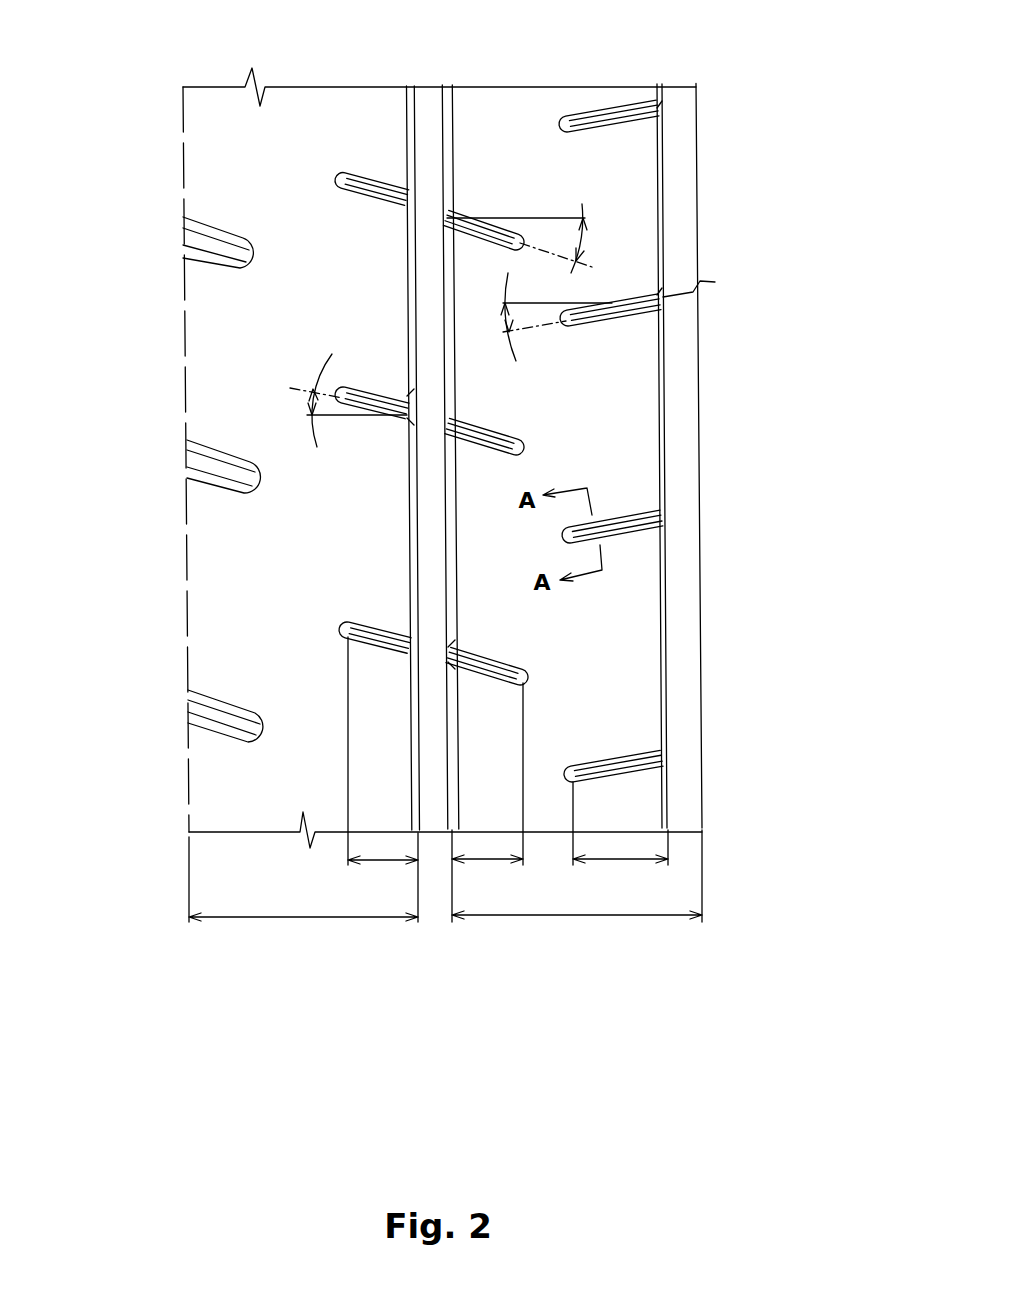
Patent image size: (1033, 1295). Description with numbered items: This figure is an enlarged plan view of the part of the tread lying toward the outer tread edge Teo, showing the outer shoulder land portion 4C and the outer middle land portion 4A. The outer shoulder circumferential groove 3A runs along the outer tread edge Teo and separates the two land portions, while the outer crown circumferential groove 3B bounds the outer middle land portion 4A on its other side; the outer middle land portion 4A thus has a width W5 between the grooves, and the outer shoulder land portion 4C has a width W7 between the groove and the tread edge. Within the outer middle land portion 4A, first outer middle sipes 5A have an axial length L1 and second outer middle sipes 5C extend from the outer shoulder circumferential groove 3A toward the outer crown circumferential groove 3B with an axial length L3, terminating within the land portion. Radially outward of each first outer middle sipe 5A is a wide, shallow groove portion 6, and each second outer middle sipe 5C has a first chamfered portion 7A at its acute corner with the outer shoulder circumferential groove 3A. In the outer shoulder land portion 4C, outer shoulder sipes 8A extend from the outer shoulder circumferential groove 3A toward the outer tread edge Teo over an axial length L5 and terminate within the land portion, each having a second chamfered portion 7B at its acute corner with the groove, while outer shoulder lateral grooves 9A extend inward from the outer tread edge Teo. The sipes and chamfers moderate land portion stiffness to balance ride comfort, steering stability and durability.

The outer tread edge Teo is at (183, 125).
The outer shoulder land portion 4C is at (313, 128).
The outer shoulder circumferential groove 3A is at (427, 125).
The outer middle land portion 4A is at (507, 120).
The outer crown circumferential groove 3B is at (677, 112).
The second chamfered portion 7B is at (372, 392).
The first chamfered portion 7A is at (455, 440).
The outer shoulder lateral groove 9A is at (222, 716).
The outer shoulder sipe 8A is at (407, 402).
The second outer middle sipe 5C is at (518, 262).
The first outer middle sipe 5A is at (618, 318).
The shallow groove portion 6 is at (410, 636).
The length of outer shoulder sipe L5 is at (383, 779).
The length of second outer middle sipe L3 is at (487, 802).
The length of first outer middle sipe L1 is at (620, 837).
The width of outer shoulder land portion W7 is at (303, 893).
The width of outer middle land portion W5 is at (577, 890).